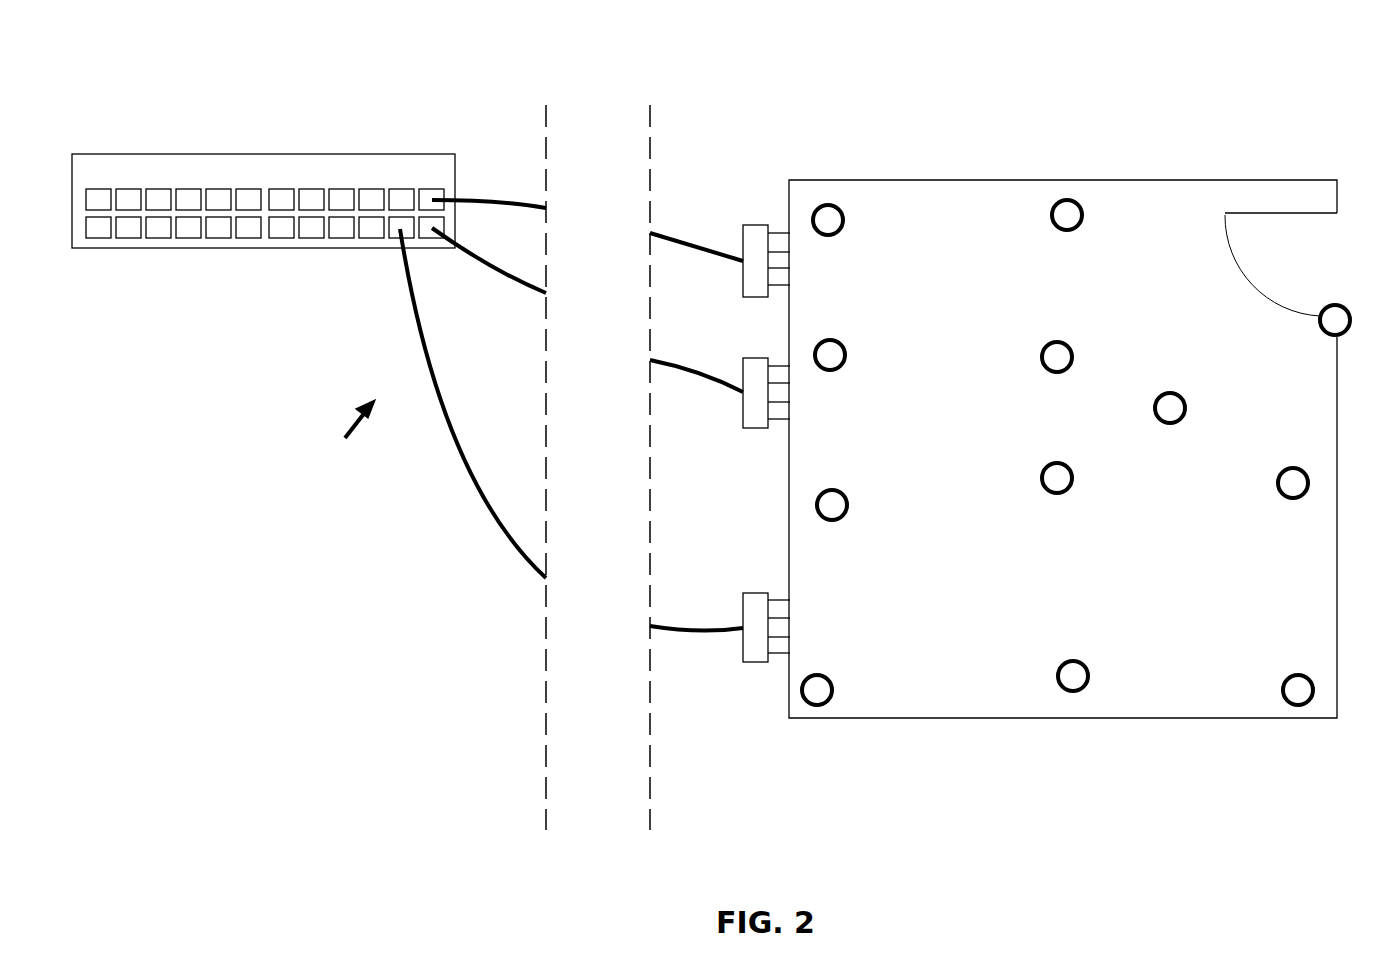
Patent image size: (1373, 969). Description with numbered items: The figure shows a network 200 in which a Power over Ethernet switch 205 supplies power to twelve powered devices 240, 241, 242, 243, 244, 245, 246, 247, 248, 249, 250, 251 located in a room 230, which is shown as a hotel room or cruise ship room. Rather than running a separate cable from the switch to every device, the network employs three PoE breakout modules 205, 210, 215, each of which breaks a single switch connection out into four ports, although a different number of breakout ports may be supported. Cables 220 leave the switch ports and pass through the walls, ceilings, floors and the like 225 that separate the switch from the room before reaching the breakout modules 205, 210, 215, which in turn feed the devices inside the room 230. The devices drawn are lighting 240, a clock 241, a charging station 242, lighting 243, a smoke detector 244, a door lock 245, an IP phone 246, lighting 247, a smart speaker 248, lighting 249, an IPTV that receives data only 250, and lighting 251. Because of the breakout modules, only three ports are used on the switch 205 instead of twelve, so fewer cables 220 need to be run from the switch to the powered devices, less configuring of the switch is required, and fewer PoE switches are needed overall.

The PoE network system 200 is at (769, 37).
The PoE switch 205 is at (113, 249).
The PoE breakout module 210 is at (743, 421).
The PoE breakout module 215 is at (743, 659).
The cables 220 is at (346, 437).
The walls, ceilings, floors 225 is at (598, 467).
The hotel room or cruise ship room 230 is at (1063, 424).
The powered device 240 is at (863, 220).
The powered device 241 is at (1095, 217).
The powered device 242 is at (893, 348).
The powered device 243 is at (1058, 383).
The powered device 244 is at (1170, 370).
The powered device 245 is at (1307, 353).
The powered device 246 is at (870, 509).
The powered device 247 is at (1058, 507).
The powered device 248 is at (1257, 489).
The powered device 249 is at (856, 689).
The powered device 250 is at (1073, 651).
The powered device 251 is at (1264, 678).